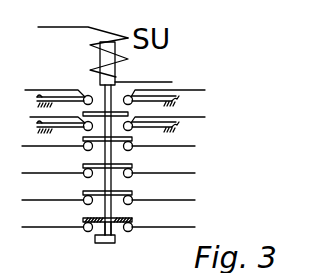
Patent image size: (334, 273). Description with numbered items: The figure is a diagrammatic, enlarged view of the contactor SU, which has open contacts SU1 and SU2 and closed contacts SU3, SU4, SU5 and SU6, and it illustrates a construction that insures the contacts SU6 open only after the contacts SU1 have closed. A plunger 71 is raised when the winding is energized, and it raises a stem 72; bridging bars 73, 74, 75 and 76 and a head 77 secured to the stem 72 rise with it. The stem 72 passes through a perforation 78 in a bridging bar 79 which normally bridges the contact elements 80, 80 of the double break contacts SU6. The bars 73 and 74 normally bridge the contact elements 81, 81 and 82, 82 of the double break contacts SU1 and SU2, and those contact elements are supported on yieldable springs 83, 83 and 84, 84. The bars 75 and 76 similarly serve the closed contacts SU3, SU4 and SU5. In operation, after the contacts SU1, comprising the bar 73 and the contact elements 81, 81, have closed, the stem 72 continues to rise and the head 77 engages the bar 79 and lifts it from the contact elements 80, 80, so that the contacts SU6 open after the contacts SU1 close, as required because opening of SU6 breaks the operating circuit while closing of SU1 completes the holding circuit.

The plunger 71 is at (99, 57).
The stem 72 is at (122, 82).
The bridging bar 73 is at (96, 111).
The bridging bar 74 is at (128, 150).
The bridging bar 75 is at (128, 177).
The bridging bar 76 is at (128, 204).
The head 77 is at (105, 244).
The perforation 78 is at (118, 225).
The bridging bar 79 is at (82, 217).
The contact elements 80 is at (83, 230).
The contact elements 81 is at (83, 103).
The contact elements 82 is at (84, 129).
The yieldable springs 83 is at (40, 97).
The yieldable springs 84 is at (34, 119).
The open contacts SU1 is at (126, 91).
The open contacts SU2 is at (129, 117).
The closed contacts SU3 is at (120, 146).
The closed contacts SU4 is at (120, 173).
The closed contacts SU5 is at (120, 200).
The closed contacts SU6 is at (120, 227).